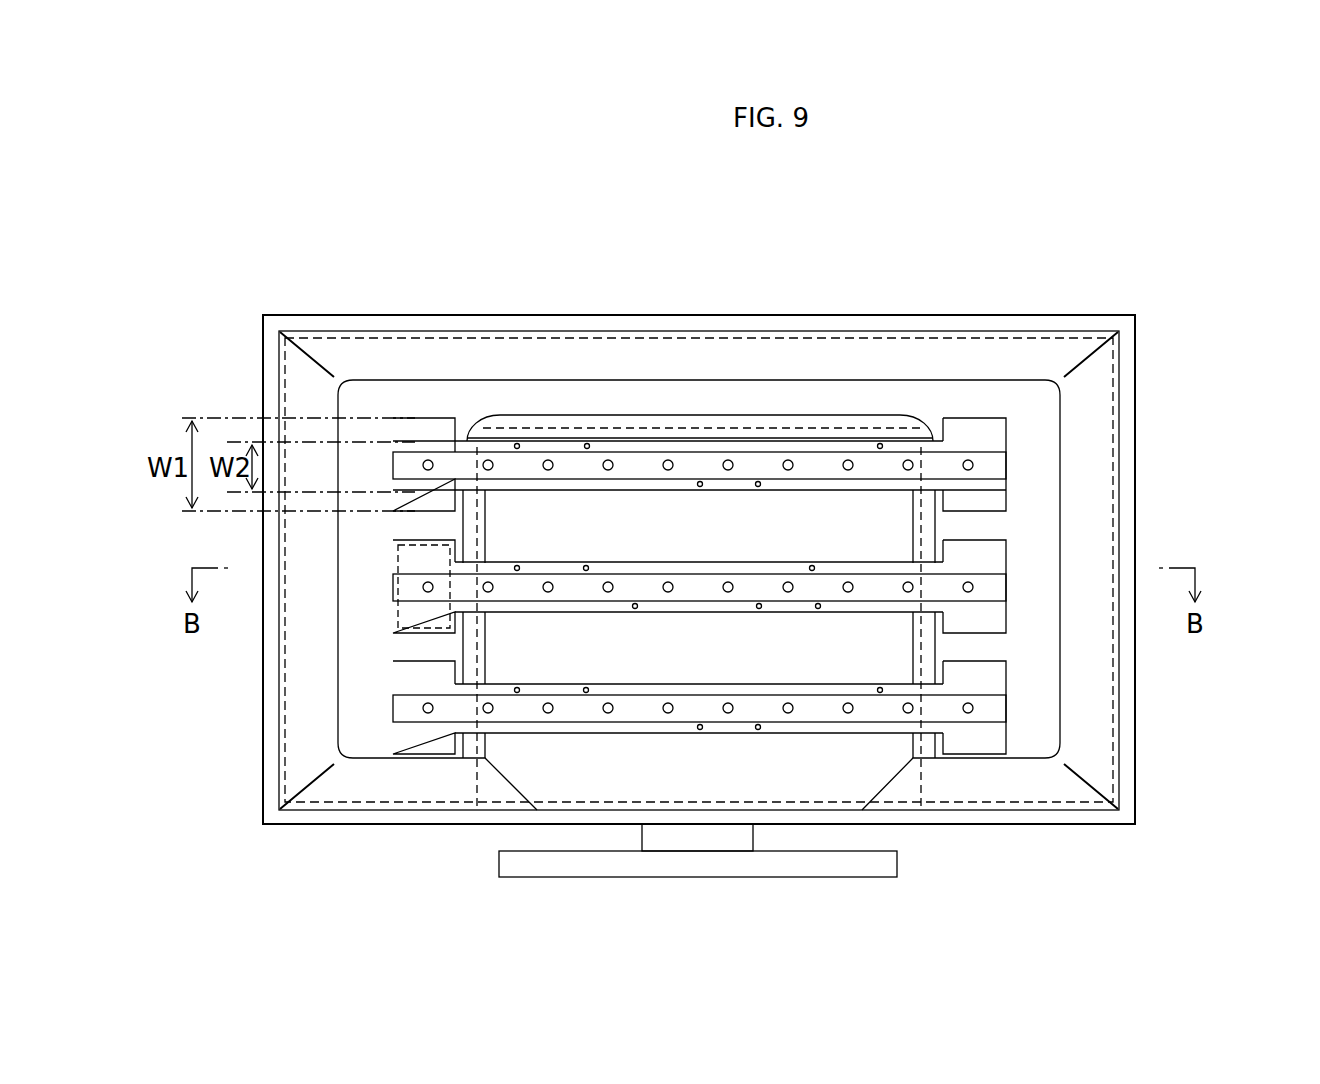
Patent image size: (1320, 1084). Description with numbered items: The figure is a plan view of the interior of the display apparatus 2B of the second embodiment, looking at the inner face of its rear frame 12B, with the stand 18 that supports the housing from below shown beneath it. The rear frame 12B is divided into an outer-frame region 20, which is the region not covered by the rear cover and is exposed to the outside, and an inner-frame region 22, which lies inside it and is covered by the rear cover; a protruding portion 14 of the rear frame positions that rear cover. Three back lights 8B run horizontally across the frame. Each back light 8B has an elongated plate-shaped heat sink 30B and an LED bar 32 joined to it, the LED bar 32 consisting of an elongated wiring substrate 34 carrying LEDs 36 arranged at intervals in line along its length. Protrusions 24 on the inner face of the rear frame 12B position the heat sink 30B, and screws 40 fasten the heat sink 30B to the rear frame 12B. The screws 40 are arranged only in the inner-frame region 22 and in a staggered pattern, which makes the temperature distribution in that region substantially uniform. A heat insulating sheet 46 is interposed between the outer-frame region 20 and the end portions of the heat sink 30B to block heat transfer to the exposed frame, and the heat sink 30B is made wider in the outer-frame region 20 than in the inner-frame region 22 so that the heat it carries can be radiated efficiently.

The display apparatus 2B is at (1079, 275).
The rear frame 12B is at (1128, 374).
The outer-frame region 20 is at (1100, 418).
The protruding portion 14 is at (603, 428).
The inner-frame region 22 is at (908, 784).
The heat sink 30B is at (1010, 743).
The heat insulating sheet 46 is at (386, 566).
The LEDs 36 is at (1010, 674).
The wiring substrate 34 is at (1008, 709).
The LED bar 32 is at (1048, 413).
The screws 40 is at (517, 443).
The protrusions 24 is at (587, 443).
The back light 8B is at (386, 518).
The stand 18 is at (880, 862).